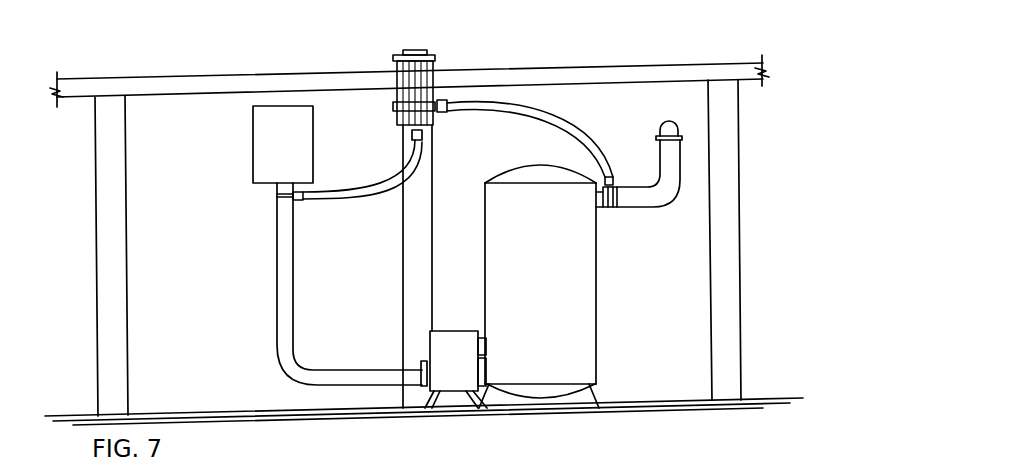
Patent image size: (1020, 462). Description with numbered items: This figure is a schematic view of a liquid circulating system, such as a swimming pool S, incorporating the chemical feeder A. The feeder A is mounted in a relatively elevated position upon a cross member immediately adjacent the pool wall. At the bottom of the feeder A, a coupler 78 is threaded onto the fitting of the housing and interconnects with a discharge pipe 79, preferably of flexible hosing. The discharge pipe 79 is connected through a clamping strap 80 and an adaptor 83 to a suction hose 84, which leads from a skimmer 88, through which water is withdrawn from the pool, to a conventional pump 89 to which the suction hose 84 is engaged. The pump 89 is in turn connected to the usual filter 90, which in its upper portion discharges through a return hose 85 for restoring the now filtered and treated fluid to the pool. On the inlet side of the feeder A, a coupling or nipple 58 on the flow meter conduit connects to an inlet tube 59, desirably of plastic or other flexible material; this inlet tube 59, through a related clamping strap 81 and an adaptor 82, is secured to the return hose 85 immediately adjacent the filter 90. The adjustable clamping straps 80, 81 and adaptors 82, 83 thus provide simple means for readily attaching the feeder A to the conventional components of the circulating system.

The swimming pool S is at (702, 65).
The chemical feeder A is at (428, 52).
The coupling or nipple 58 is at (447, 100).
The inlet tube 59 is at (510, 105).
The coupler 78 is at (407, 135).
The discharge pipe 79 is at (360, 184).
The clamping strap 80 is at (278, 196).
The clamping strap 81 is at (612, 210).
The adaptor 82 is at (615, 186).
The adaptor 83 is at (277, 204).
The suction hose 84 is at (277, 232).
The return hose 85 is at (681, 168).
The skimmer 88 is at (257, 162).
The pump 89 is at (452, 383).
The filter 90 is at (590, 287).